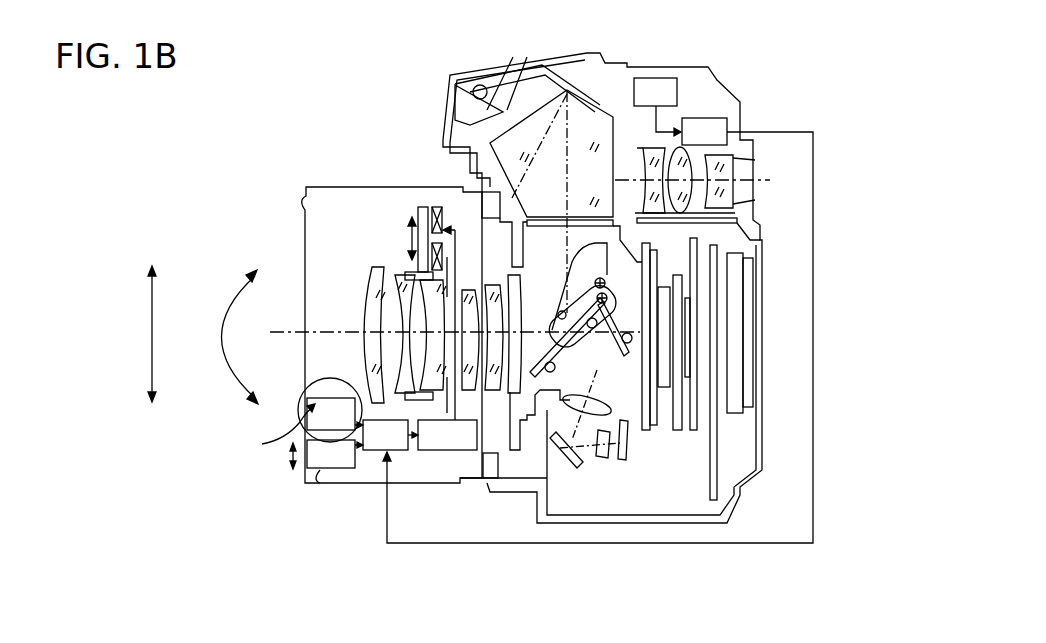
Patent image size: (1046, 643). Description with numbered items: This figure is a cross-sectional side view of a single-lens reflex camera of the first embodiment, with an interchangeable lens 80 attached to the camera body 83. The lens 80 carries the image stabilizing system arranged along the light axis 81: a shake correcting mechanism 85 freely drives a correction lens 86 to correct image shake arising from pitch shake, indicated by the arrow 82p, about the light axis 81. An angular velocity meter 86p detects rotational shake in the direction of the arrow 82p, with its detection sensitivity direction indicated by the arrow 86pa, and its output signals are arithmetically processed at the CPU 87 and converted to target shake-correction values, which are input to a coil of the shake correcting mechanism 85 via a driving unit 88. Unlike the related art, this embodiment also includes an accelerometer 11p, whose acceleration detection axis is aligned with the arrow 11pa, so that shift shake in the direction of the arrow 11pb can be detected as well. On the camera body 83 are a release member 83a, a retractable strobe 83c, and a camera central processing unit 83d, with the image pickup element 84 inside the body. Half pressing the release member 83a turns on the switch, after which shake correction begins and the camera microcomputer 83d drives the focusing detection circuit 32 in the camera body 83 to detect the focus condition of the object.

The interchangeable lens 80 is at (305, 206).
The light axis 81 is at (288, 332).
The shake correcting mechanism 85 is at (386, 208).
The correction lens 86 is at (397, 312).
The arrow indicating detection sensitivity direction 86pa is at (305, 392).
The angular velocity meter 86p is at (295, 417).
The arrow indicating acceleration detection axis 11pa is at (290, 470).
The accelerometer 11p is at (333, 470).
The arrow indicating shift shake 11pb is at (150, 314).
The arrow indicating pitch shake 82p is at (223, 352).
The CPU 87 is at (372, 452).
The driving unit 88 is at (448, 452).
The camera body 83 is at (760, 452).
The release member 83a is at (677, 92).
The retractable strobe 83c is at (500, 60).
The camera central processing unit 83d is at (706, 118).
The image pickup element 84 is at (688, 345).
The focusing detection circuit 32 is at (628, 458).